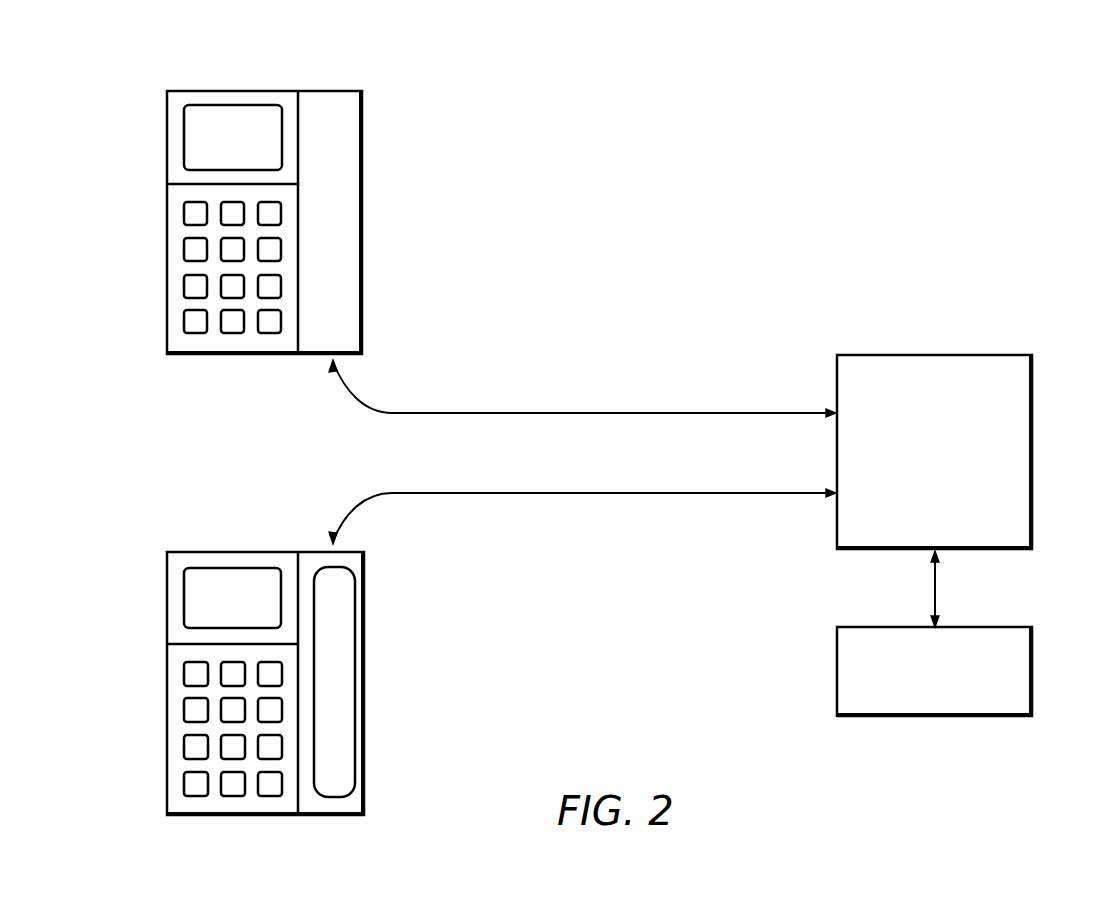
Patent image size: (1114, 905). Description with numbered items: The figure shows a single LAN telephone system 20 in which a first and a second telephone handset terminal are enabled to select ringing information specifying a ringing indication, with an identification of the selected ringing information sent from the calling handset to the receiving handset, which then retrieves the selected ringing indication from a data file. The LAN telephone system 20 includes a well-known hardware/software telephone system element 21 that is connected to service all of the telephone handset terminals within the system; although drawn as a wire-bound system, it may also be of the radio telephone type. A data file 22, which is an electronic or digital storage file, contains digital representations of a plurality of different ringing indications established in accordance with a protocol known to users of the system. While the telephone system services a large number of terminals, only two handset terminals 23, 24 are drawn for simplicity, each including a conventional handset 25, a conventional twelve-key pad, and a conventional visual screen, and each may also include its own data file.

The LAN telephone system 20 is at (757, 170).
The telephone system element 21 is at (1036, 394).
The data file 22 is at (1036, 652).
The handset terminal 23 is at (281, 70).
The handset terminal 24 is at (315, 544).
The handset 25 is at (338, 616).